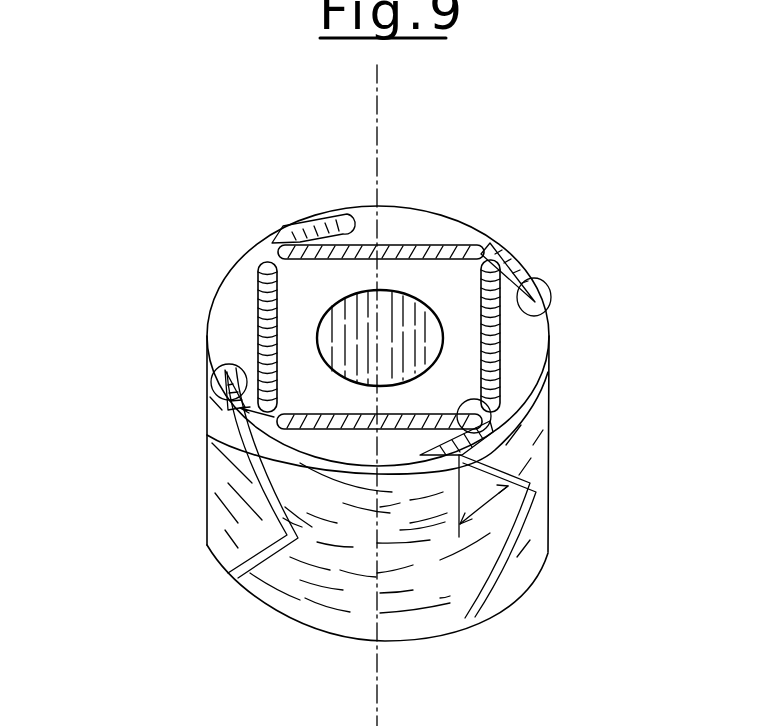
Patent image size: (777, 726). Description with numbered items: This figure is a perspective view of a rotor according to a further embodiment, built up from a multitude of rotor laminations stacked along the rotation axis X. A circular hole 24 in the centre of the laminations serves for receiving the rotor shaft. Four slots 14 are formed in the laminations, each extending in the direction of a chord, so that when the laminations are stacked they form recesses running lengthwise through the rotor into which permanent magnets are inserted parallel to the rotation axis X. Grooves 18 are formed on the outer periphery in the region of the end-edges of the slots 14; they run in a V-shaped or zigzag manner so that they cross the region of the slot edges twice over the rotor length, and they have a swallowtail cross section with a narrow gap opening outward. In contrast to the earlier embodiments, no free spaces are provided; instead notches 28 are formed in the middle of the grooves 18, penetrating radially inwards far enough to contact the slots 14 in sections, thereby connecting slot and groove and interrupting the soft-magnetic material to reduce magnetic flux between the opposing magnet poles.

The slot 14 is at (423, 323).
The groove 18 is at (301, 222).
The circular hole 24 is at (466, 244).
The notch 28 is at (330, 232).
The rotation axis X is at (397, 182).